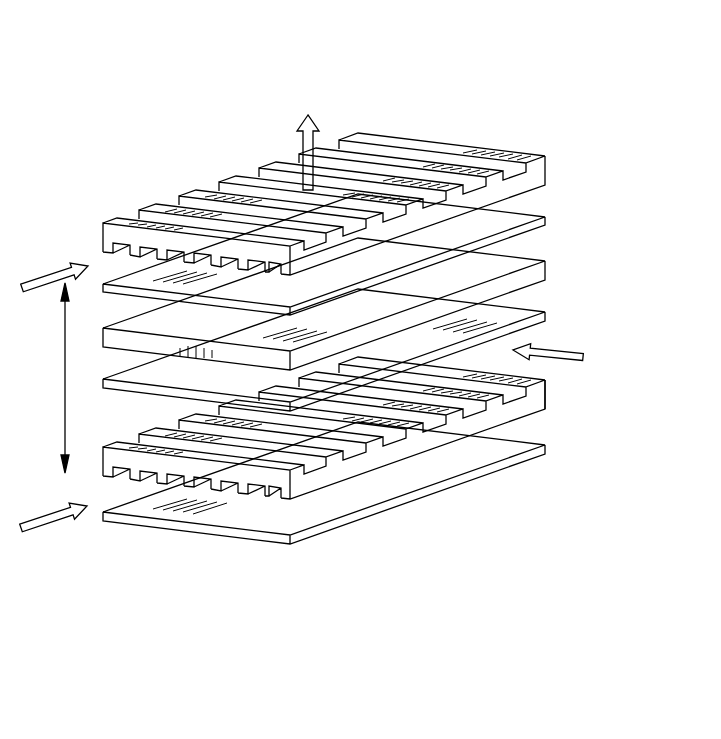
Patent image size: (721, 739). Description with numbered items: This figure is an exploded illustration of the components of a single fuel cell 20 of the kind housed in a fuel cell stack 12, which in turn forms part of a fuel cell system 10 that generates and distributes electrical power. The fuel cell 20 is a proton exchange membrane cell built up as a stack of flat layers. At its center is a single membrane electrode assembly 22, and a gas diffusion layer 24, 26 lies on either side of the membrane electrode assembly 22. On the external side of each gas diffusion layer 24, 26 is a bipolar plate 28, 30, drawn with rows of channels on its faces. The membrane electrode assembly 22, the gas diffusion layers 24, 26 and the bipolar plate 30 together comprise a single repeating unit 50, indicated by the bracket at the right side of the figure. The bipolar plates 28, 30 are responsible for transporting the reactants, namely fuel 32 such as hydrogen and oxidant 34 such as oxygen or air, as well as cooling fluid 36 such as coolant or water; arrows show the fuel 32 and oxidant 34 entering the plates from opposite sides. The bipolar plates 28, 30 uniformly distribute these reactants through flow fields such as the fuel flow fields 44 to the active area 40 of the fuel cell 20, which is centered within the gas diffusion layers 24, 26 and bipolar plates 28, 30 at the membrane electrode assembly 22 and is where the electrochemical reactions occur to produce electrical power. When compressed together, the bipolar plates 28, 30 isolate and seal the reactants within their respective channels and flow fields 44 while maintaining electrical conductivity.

The fuel cell system 10 is at (4, 178).
The fuel cell stack 12 is at (154, 144).
The fuel cell 20 is at (353, 372).
The membrane electrode assembly 22 is at (560, 270).
The gas diffusion layer 24 is at (560, 218).
The gas diffusion layer 26 is at (560, 317).
The bipolar plate 28 is at (560, 167).
The bipolar plate 30 is at (560, 392).
The fuel 32 is at (558, 347).
The oxidant 34 is at (42, 290).
The cooling fluid 36 is at (536, 406).
The active area 40 is at (56, 391).
The fuel flow fields 44 is at (447, 128).
The repeating unit 50 is at (645, 188).